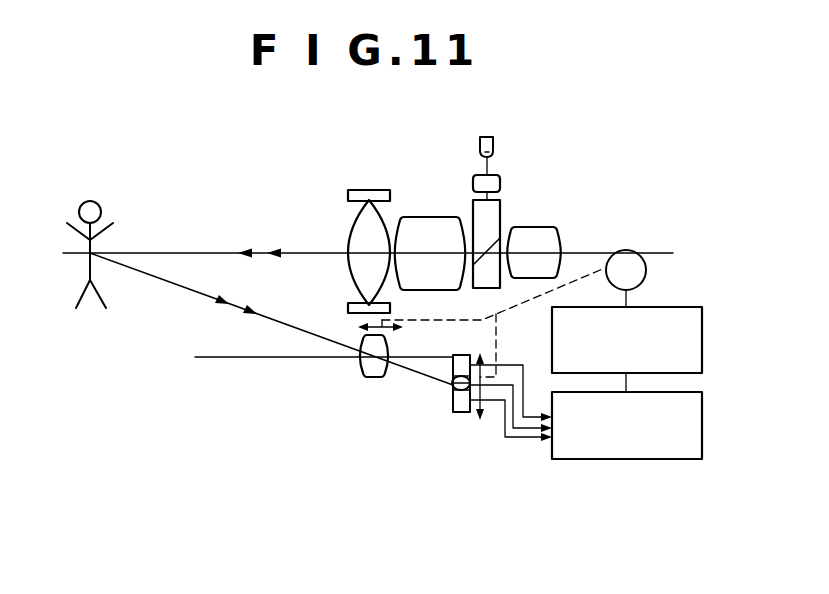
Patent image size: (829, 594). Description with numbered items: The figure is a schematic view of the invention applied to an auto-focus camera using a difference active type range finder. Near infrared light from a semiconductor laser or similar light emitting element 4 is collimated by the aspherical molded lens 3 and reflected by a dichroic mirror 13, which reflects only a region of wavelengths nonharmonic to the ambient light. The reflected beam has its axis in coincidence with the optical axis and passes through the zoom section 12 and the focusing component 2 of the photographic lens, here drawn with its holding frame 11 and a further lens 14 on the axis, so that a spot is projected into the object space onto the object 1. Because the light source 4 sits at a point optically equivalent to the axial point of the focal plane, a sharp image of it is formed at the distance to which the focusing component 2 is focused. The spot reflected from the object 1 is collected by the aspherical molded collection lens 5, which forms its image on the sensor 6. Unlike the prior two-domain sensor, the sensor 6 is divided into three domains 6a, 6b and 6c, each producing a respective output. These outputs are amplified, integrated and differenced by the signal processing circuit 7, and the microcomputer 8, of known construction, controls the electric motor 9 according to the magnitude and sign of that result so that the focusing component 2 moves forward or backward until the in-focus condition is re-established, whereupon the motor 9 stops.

The object 1 is at (100, 243).
The focusing component 2 is at (349, 227).
The aspherical molded lens 3 is at (500, 185).
The light emitting element 4 is at (487, 137).
The aspherical molded collection lens 5 is at (360, 376).
The sensor 6 is at (439, 402).
The image receiving area 6a is at (460, 356).
The image receiving area 6b is at (463, 412).
The image receiving area 6c is at (452, 384).
The signal processing circuit 7 is at (640, 459).
The microcomputer 8 is at (680, 307).
The electric motor 9 is at (626, 250).
The lens holding frame 11 is at (372, 190).
The zoom section 12 is at (420, 217).
The dichroic mirror 13 is at (473, 212).
The lens 14 is at (548, 227).